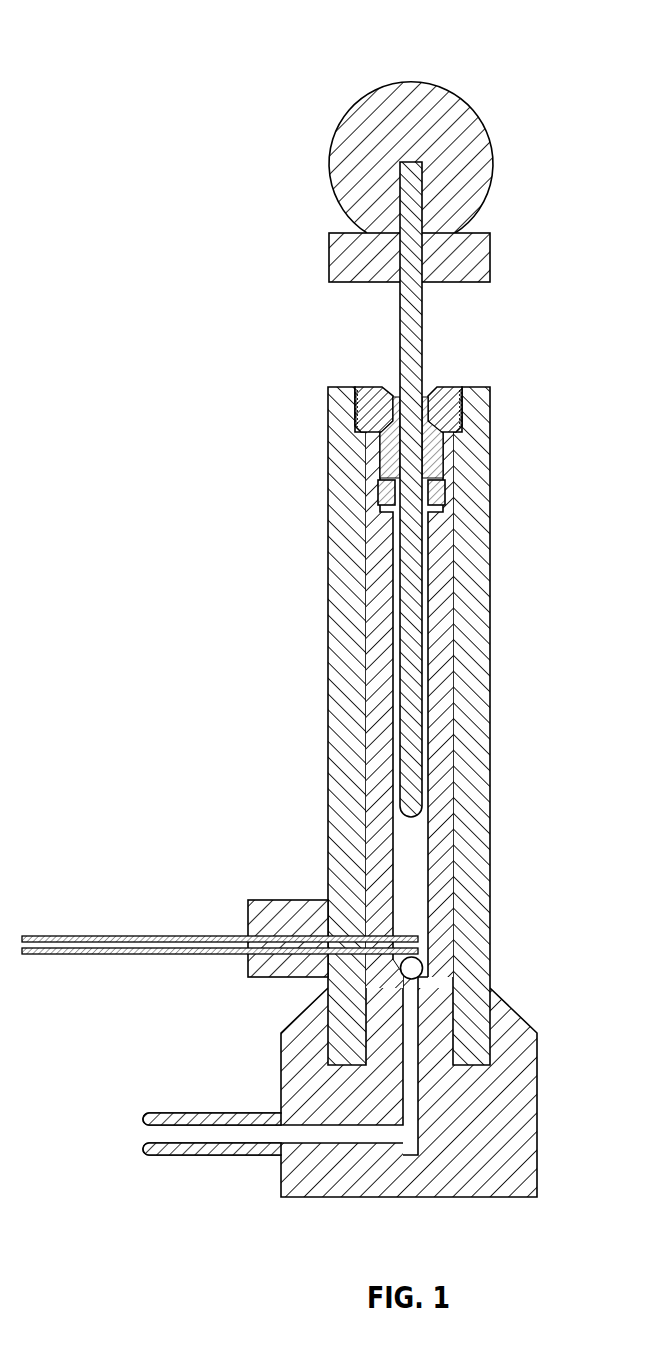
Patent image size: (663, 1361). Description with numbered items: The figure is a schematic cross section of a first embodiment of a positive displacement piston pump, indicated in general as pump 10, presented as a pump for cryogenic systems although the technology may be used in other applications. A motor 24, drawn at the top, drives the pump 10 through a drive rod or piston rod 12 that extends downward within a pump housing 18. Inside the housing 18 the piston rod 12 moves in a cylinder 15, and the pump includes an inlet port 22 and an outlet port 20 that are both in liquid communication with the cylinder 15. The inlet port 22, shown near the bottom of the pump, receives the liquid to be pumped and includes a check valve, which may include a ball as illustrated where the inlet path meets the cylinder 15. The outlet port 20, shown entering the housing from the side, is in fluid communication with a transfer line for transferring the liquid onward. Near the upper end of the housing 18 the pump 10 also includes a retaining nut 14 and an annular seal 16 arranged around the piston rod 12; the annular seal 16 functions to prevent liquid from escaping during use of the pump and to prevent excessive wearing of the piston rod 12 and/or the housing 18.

The pump 10 is at (148, 53).
The piston rod 12 is at (422, 342).
The retaining nut 14 is at (448, 413).
The cylinder 15 is at (410, 868).
The annular seal 16 is at (430, 462).
The pump housing 18 is at (490, 573).
The outlet port 20 is at (117, 935).
The inlet port 22 is at (185, 1117).
The motor 24 is at (497, 166).